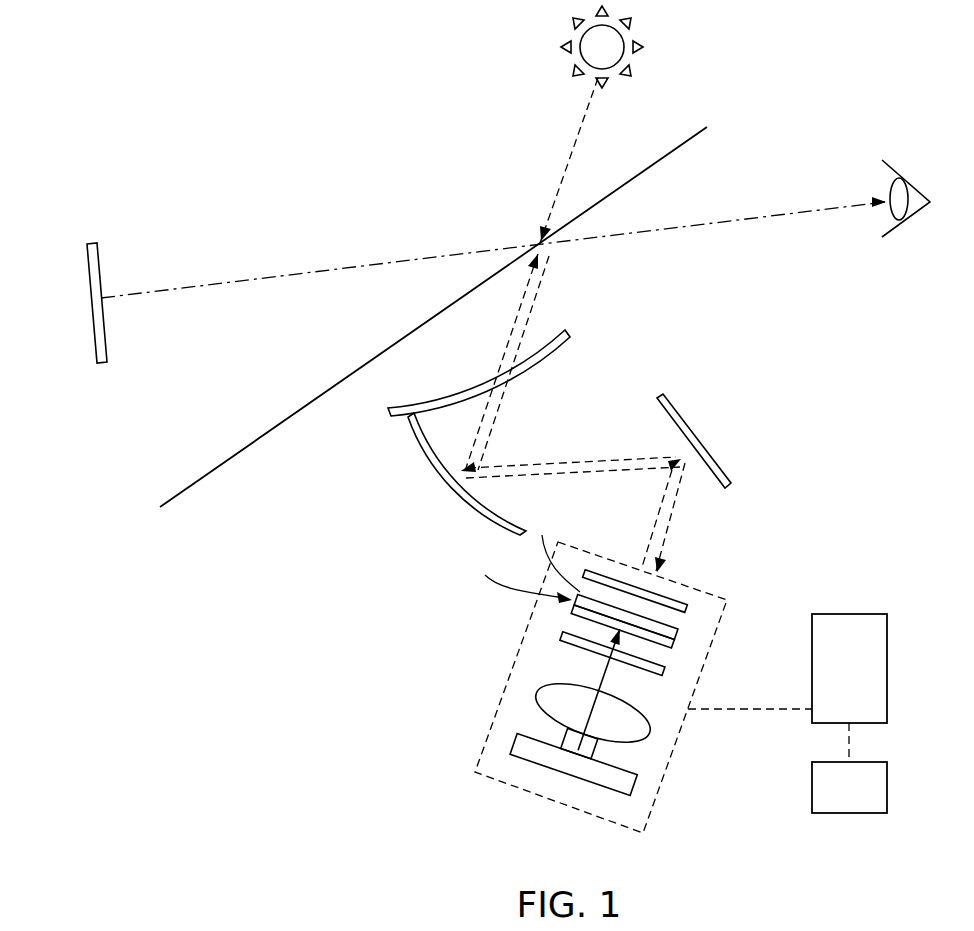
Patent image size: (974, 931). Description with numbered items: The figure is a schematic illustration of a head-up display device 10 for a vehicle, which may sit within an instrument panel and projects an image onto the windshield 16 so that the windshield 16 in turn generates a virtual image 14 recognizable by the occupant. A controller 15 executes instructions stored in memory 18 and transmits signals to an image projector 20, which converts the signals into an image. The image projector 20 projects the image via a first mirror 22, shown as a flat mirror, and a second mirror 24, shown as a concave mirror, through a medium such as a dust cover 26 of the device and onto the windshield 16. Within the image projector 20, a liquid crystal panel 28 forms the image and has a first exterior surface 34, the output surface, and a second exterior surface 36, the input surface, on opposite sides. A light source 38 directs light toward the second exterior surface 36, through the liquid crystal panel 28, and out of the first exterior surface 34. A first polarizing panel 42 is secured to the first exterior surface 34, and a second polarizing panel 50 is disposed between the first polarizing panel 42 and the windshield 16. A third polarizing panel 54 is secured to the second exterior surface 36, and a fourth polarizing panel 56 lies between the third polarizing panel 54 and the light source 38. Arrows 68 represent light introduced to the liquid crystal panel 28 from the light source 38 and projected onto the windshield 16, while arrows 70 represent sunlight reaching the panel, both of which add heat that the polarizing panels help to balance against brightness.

The head-up display device 10 is at (858, 395).
The virtual image 14 is at (87, 270).
The controller 15 is at (887, 668).
The windshield 16 is at (683, 146).
The memory 18 is at (887, 790).
The image projector 20 is at (473, 768).
The first mirror 22 is at (727, 472).
The second mirror 24 is at (462, 505).
The dust cover 26 is at (555, 346).
The liquid crystal panel 28 is at (523, 572).
The first exterior surface 34 is at (675, 627).
The second exterior surface 36 is at (667, 656).
The light source 38 is at (632, 730).
The first polarizing panel 42 is at (555, 547).
The second polarizing panel 50 is at (692, 597).
The third polarizing panel 54 is at (572, 608).
The fourth polarizing panel 56 is at (570, 638).
The arrows representing light from the light source 68 is at (508, 318).
The arrows representing light from the Sun 70 is at (562, 165).